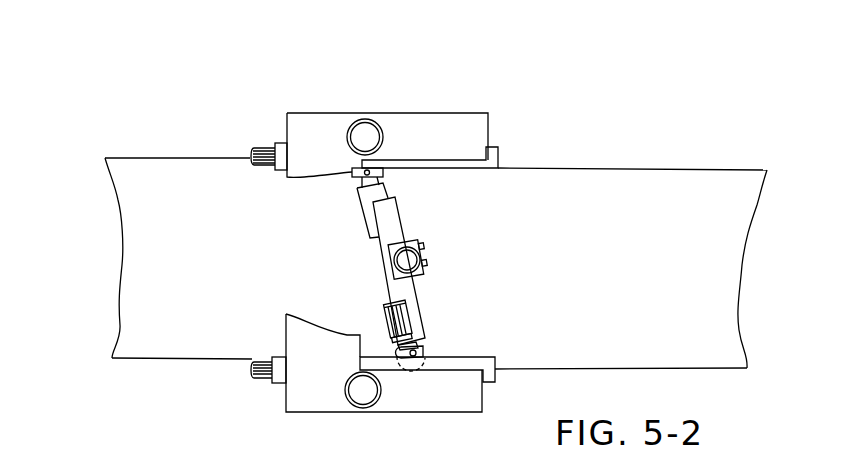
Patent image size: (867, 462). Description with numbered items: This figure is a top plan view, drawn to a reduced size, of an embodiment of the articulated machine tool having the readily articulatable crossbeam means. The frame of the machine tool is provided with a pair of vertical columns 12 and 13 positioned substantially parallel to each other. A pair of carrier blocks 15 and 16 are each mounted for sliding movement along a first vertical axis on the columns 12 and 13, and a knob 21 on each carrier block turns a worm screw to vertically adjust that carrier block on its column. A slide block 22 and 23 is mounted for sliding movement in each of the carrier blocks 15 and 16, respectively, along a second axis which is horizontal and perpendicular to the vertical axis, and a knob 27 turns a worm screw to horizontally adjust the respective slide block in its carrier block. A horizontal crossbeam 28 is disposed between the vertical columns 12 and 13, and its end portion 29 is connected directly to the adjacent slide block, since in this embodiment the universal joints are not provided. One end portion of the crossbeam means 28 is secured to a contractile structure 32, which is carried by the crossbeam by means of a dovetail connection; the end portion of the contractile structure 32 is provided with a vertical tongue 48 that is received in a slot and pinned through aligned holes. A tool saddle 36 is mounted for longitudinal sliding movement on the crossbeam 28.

The vertical column 12 is at (468, 393).
The vertical column 13 is at (415, 124).
The carrier block 15 is at (490, 368).
The carrier block 16 is at (497, 152).
The knob 21 is at (366, 130).
The slide block 22 is at (425, 353).
The slide block 23 is at (383, 172).
The knob 27 is at (263, 153).
The horizontal crossbeam 28 is at (400, 219).
The end portion 29 is at (401, 356).
The contractile structure 32 is at (368, 226).
The tool saddle 36 is at (430, 262).
The vertical tongue 48 is at (360, 178).